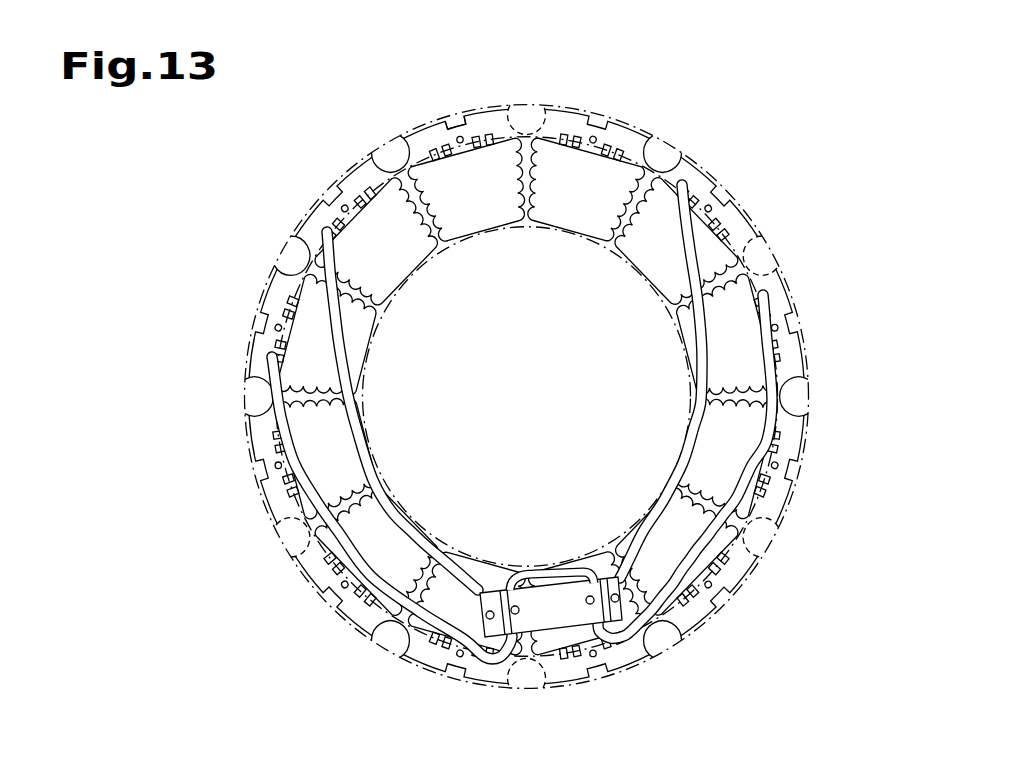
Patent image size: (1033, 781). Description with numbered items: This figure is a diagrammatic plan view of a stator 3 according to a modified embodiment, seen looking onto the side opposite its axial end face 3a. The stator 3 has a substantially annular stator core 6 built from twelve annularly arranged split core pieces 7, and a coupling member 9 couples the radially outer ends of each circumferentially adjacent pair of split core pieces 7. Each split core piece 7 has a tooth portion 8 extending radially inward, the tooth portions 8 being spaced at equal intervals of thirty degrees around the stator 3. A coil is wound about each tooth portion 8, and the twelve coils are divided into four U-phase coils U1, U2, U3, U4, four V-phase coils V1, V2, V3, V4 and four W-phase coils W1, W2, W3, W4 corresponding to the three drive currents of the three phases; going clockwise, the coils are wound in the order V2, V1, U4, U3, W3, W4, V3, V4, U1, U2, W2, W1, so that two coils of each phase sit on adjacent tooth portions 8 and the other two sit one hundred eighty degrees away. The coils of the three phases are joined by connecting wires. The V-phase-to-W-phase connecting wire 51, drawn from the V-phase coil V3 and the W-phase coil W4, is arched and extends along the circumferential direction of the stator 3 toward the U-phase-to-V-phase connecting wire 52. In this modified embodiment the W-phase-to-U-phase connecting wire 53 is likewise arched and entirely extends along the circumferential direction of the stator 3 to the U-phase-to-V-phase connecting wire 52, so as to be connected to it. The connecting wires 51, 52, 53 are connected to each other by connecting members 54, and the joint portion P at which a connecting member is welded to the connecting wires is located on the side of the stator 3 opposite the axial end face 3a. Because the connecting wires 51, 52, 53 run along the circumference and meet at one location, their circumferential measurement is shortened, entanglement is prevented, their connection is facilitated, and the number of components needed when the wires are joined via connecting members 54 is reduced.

The stator 3 is at (745, 139).
The axial end face 3a is at (695, 178).
The stator core 6 is at (637, 121).
The split core piece 7 is at (479, 113).
The tooth portion 8 is at (687, 380).
The coupling member 9 is at (524, 122).
The V-phase-to-W-phase connecting wire 51 is at (355, 415).
The U-phase-to-V-phase connecting wire 52 is at (622, 652).
The W-phase-to-U-phase connecting wire 53 is at (655, 515).
The connecting member 54 is at (555, 598).
The joint portion P is at (630, 580).
The U-phase coil U1 is at (587, 212).
The U-phase coil U2 is at (667, 270).
The U-phase coil U3 is at (382, 540).
The U-phase coil U4 is at (476, 568).
The V-phase coil V1 is at (588, 562).
The V-phase coil V2 is at (657, 550).
The V-phase coil V3 is at (407, 252).
The V-phase coil V4 is at (492, 208).
The W-phase coil W1 is at (722, 457).
The W-phase coil W2 is at (712, 345).
The W-phase coil W3 is at (368, 457).
The W-phase coil W4 is at (353, 333).